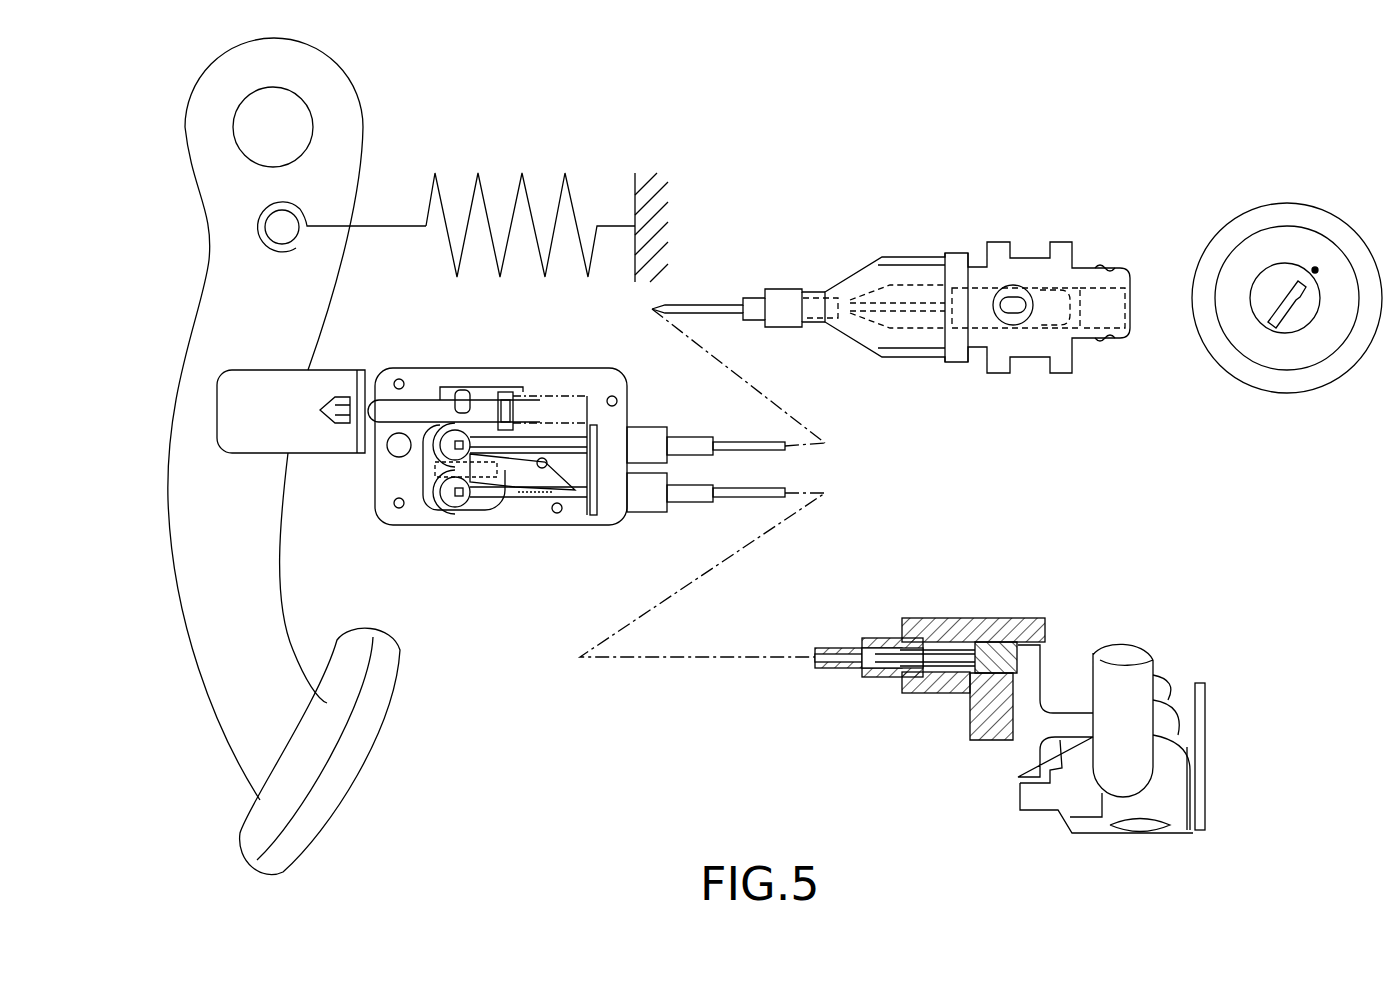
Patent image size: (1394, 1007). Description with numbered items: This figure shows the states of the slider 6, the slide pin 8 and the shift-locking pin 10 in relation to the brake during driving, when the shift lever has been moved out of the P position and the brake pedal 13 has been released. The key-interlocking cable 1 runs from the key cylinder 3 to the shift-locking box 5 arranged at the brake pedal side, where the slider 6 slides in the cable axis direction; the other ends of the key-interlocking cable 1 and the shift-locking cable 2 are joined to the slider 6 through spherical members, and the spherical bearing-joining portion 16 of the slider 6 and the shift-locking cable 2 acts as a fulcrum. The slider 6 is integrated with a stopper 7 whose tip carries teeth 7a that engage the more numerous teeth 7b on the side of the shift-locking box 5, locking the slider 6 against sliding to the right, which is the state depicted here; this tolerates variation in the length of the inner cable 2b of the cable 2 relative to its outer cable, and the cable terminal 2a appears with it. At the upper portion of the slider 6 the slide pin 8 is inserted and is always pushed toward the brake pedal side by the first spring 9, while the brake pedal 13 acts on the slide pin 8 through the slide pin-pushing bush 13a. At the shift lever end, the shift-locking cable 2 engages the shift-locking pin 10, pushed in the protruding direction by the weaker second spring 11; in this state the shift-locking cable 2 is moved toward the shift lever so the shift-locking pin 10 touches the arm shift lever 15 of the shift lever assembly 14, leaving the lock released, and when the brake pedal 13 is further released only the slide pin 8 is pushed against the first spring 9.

The key-interlocking cable 1 is at (720, 305).
The shift-locking cable 2 is at (802, 655).
The first terminal 2a is at (688, 500).
The inner cable 2b is at (735, 497).
The key cylinder 3 is at (915, 258).
The shift-locking box 5 is at (463, 527).
The slider 6 is at (437, 465).
The stopper 7 is at (591, 517).
The teeth 7a is at (533, 495).
The teeth 7b is at (528, 492).
The slide pin 8 is at (423, 405).
The first spring 9 is at (508, 393).
The shift-locking pin 10 is at (1027, 642).
The second spring 11 is at (941, 618).
The brake pedal 13 is at (257, 547).
The slide pin-pushing bush 13a is at (357, 445).
The shift lever assembly 14 is at (968, 720).
The arm shift lever 15 is at (1033, 660).
The spherical bearing-joining portion 16 is at (450, 495).